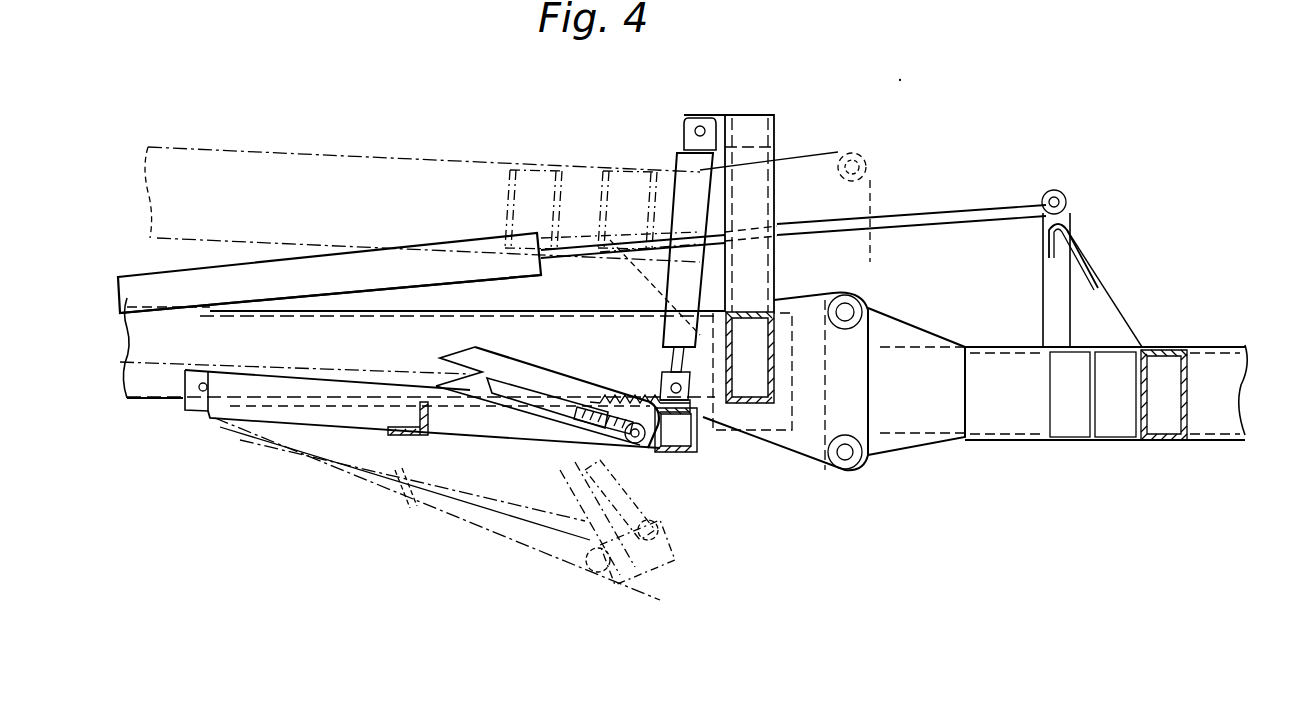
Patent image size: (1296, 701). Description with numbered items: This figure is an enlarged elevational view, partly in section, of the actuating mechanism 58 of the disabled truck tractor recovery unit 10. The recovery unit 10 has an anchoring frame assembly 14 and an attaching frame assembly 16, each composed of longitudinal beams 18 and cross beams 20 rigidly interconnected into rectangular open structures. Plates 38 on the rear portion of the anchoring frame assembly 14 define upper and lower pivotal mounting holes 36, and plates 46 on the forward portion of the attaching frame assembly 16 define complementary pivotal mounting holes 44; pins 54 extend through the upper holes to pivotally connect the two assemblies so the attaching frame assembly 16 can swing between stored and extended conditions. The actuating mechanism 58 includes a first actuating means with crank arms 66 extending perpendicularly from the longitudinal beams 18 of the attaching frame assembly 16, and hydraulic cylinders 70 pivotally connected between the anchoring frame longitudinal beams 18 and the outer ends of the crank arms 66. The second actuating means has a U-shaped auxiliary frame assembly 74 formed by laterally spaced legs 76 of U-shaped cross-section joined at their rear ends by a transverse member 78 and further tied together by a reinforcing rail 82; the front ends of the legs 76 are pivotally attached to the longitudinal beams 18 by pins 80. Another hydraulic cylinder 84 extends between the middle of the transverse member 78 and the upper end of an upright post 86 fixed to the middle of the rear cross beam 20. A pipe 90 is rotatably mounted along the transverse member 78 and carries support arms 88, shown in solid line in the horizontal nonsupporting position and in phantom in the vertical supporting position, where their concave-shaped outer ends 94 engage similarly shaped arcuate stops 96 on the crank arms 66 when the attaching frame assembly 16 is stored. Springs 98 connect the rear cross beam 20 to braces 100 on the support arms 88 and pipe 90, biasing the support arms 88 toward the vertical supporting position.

The recovery unit 10 is at (862, 112).
The anchoring frame assembly 14 is at (168, 402).
The attaching frame assembly 16 is at (272, 148).
The longitudinal beams 18 is at (208, 148).
The cross beams 20 is at (1186, 352).
The pivotal mounting holes 36 is at (858, 314).
The plates 38 is at (812, 440).
The complementary pivotal mounting holes 44 is at (878, 150).
The plates 46 is at (855, 300).
The pins 54 is at (870, 262).
The actuating mechanism 58 is at (348, 250).
The crank arms 66 is at (1062, 318).
The hydraulic cylinders 70 is at (440, 268).
The auxiliary frame assembly 74 is at (472, 535).
The legs 76 is at (312, 470).
The transverse member 78 is at (698, 445).
The pins 80 is at (200, 394).
The reinforcing rail 82 is at (400, 505).
The hydraulic cylinder 84 is at (690, 210).
The upright post 86 is at (774, 148).
The support arms 88 is at (520, 412).
The pipe 90 is at (648, 458).
The concave-shaped outer ends 94 is at (470, 350).
The arcuate stops 96 is at (1048, 243).
The springs 98 is at (630, 440).
The braces 100 is at (545, 420).